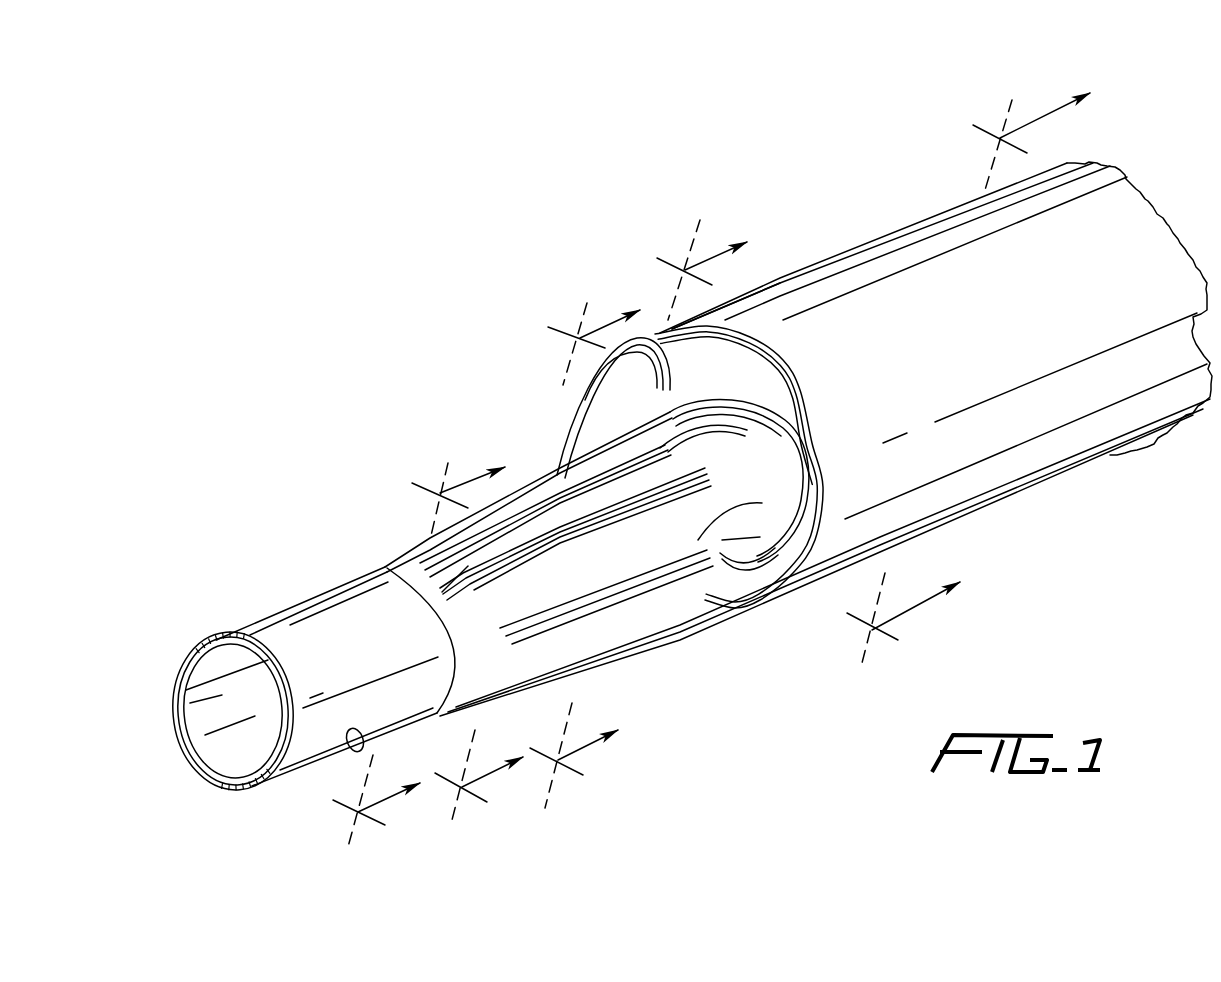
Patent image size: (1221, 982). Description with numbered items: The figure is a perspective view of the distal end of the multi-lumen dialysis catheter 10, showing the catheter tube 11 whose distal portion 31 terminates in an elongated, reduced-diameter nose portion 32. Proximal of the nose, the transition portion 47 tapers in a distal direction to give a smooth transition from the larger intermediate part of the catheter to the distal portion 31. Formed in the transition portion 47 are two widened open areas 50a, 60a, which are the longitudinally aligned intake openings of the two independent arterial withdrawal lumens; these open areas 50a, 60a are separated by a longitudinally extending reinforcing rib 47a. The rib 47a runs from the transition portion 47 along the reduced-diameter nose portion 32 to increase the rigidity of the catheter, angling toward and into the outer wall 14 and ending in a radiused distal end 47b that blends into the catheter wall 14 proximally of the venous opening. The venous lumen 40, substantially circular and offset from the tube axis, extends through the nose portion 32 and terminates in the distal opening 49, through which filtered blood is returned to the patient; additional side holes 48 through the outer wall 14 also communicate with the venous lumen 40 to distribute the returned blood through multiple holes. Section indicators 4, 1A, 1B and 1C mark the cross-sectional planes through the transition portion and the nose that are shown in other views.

The catheter 10 is at (1047, 537).
The catheter tube 11 is at (915, 273).
The outer wall 14 is at (220, 683).
The distal portion 31 is at (567, 224).
The nose portion 32 is at (415, 523).
The venous lumen 40 is at (230, 737).
The transition portion 47 is at (713, 373).
The reinforcing rib 47a is at (557, 472).
The distal end of the rib 47b is at (428, 564).
The side holes 48 is at (310, 679).
The distal opening 49 is at (215, 672).
The open area 50a is at (627, 397).
The open area 60a is at (718, 528).
The section line 4 is at (968, 366).
The section line 1A is at (638, 512).
The section line 1B is at (537, 548).
The section line 1C is at (419, 644).